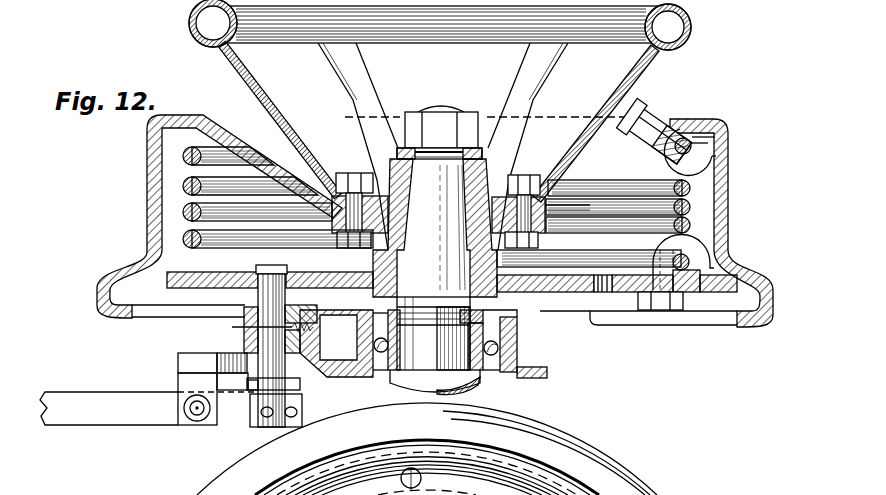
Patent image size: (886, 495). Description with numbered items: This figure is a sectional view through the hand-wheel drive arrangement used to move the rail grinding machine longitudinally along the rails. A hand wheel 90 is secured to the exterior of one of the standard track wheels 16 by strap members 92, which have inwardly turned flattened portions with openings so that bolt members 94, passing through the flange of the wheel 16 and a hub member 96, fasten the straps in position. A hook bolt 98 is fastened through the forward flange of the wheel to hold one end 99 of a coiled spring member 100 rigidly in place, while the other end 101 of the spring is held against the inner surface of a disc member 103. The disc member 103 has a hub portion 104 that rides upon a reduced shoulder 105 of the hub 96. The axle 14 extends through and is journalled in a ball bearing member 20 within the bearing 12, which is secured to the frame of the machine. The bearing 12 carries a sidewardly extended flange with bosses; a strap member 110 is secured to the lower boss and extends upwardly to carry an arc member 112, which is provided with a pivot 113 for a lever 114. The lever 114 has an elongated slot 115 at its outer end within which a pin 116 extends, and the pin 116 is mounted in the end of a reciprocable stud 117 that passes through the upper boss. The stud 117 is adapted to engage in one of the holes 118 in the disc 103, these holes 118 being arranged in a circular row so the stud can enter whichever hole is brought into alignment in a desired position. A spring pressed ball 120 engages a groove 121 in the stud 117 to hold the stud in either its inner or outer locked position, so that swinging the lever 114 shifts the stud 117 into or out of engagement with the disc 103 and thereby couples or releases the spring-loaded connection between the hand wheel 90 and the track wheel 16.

The hand wheel 90 is at (189, 17).
The strap members 92 is at (242, 72).
The track wheels 16 is at (146, 205).
The bolt members 94 is at (347, 173).
The hub member 96 is at (500, 224).
The hook bolt 98 is at (685, 127).
The end of coiled spring 99 is at (712, 154).
The coiled spring member 100 is at (692, 195).
The other end of coiled spring 101 is at (725, 257).
The disc member 103 is at (540, 290).
The hub portion 104 is at (372, 270).
The reduced shoulder 105 is at (480, 272).
The holes 118 is at (610, 290).
The spring pressed ball 120 is at (272, 312).
The groove 121 is at (252, 328).
The reciprocable stud 117 is at (267, 348).
The strap member 110 is at (190, 363).
The arc member 112 is at (190, 385).
The pivot 113 is at (193, 421).
The lever 114 is at (98, 420).
The pin 116 is at (262, 420).
The elongated slot 115 is at (300, 410).
The axle 14 is at (490, 389).
The ball bearing member 20 is at (498, 349).
The bearing member 12 is at (547, 378).